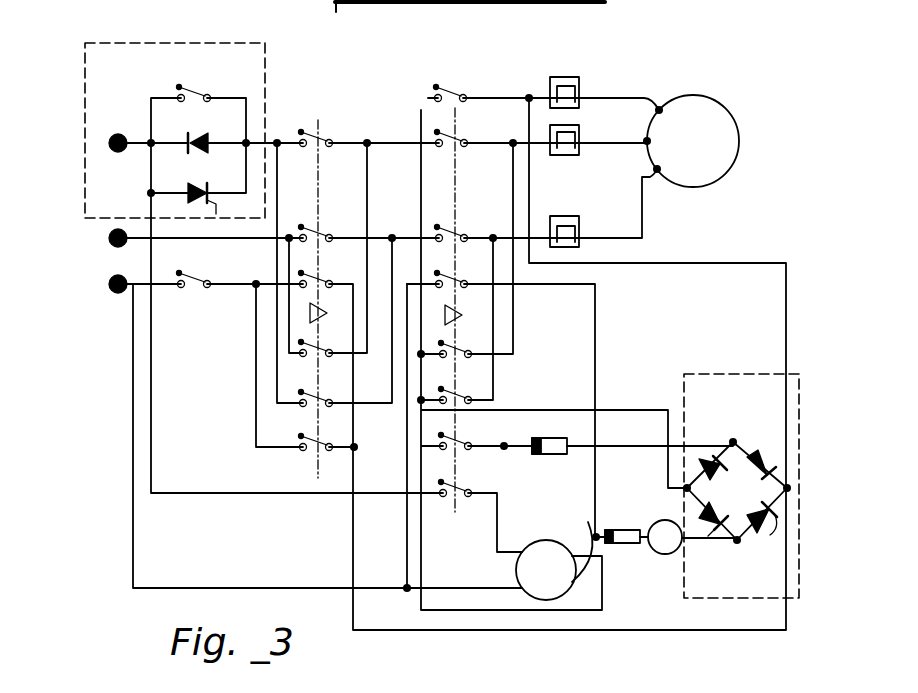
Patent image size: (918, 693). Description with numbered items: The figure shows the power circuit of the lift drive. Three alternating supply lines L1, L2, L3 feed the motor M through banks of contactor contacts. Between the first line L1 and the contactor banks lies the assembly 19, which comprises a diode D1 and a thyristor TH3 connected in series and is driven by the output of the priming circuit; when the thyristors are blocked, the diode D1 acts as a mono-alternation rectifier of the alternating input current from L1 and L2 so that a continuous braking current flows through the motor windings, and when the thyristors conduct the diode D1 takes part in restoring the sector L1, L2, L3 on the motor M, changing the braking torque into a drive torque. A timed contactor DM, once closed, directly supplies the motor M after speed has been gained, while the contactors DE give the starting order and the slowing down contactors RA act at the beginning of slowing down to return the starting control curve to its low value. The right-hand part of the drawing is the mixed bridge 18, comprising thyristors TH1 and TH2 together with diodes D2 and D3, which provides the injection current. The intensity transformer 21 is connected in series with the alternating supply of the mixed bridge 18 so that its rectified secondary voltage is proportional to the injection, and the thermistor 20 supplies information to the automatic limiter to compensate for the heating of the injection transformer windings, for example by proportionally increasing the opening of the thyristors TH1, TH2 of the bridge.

The mixed bridge 18 is at (805, 393).
The assembly 19 is at (90, 78).
The thermistor 20 is at (549, 545).
The intensity transformer 21 is at (648, 552).
The motor M is at (741, 136).
The timed contactor DM is at (198, 92).
The contactors DE is at (318, 463).
The slowing down contactors RA is at (445, 522).
The alternating input line L1 is at (114, 134).
The alternating input line L2 is at (112, 231).
The alternating input line L3 is at (110, 279).
The diode D1 is at (186, 140).
The diode D2 is at (707, 456).
The diode D3 is at (768, 452).
The thyristor TH1 is at (698, 523).
The thyristor TH2 is at (762, 545).
The thyristor TH3 is at (180, 189).